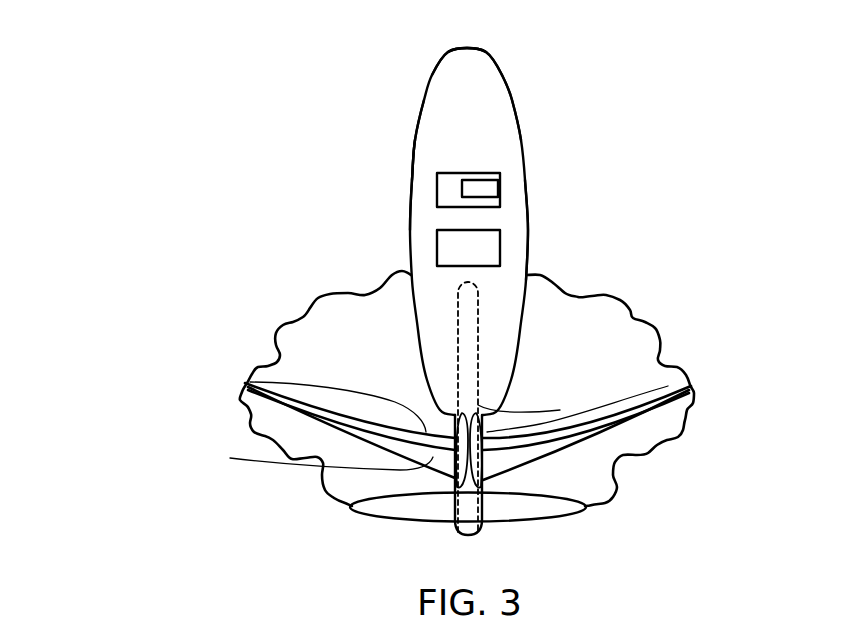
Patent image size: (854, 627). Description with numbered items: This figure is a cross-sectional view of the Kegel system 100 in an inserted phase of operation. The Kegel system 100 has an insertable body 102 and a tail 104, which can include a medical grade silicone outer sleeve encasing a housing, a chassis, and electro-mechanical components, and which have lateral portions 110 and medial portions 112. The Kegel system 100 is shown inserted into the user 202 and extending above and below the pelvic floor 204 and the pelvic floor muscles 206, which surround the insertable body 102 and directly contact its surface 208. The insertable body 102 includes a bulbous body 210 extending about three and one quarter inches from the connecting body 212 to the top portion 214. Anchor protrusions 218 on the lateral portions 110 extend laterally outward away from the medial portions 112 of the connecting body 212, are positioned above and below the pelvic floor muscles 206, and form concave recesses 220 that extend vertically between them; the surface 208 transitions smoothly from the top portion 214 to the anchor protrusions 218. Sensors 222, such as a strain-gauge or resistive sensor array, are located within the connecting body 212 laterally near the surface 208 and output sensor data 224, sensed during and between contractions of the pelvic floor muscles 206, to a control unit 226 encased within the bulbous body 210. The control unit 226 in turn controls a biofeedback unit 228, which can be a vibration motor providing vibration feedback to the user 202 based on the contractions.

The Kegel system 100 is at (193, 53).
The insertable body 102 is at (357, 236).
The tail 104 is at (482, 325).
The lateral portions 110 is at (411, 126).
The medial portions 112 is at (466, 101).
The user 202 is at (333, 512).
The pelvic floor 204 is at (278, 405).
The pelvic floor muscles 206 is at (250, 382).
The surface 208 is at (412, 175).
The bulbous body 210 is at (508, 111).
The connecting body 212 is at (505, 515).
The top portion 214 is at (510, 52).
The anchor protrusions 218 is at (492, 432).
The concave recesses 220 is at (490, 430).
The sensors 222 is at (485, 462).
The sensor data 224 is at (490, 188).
The control unit 226 is at (460, 172).
The biofeedback unit 228 is at (490, 235).